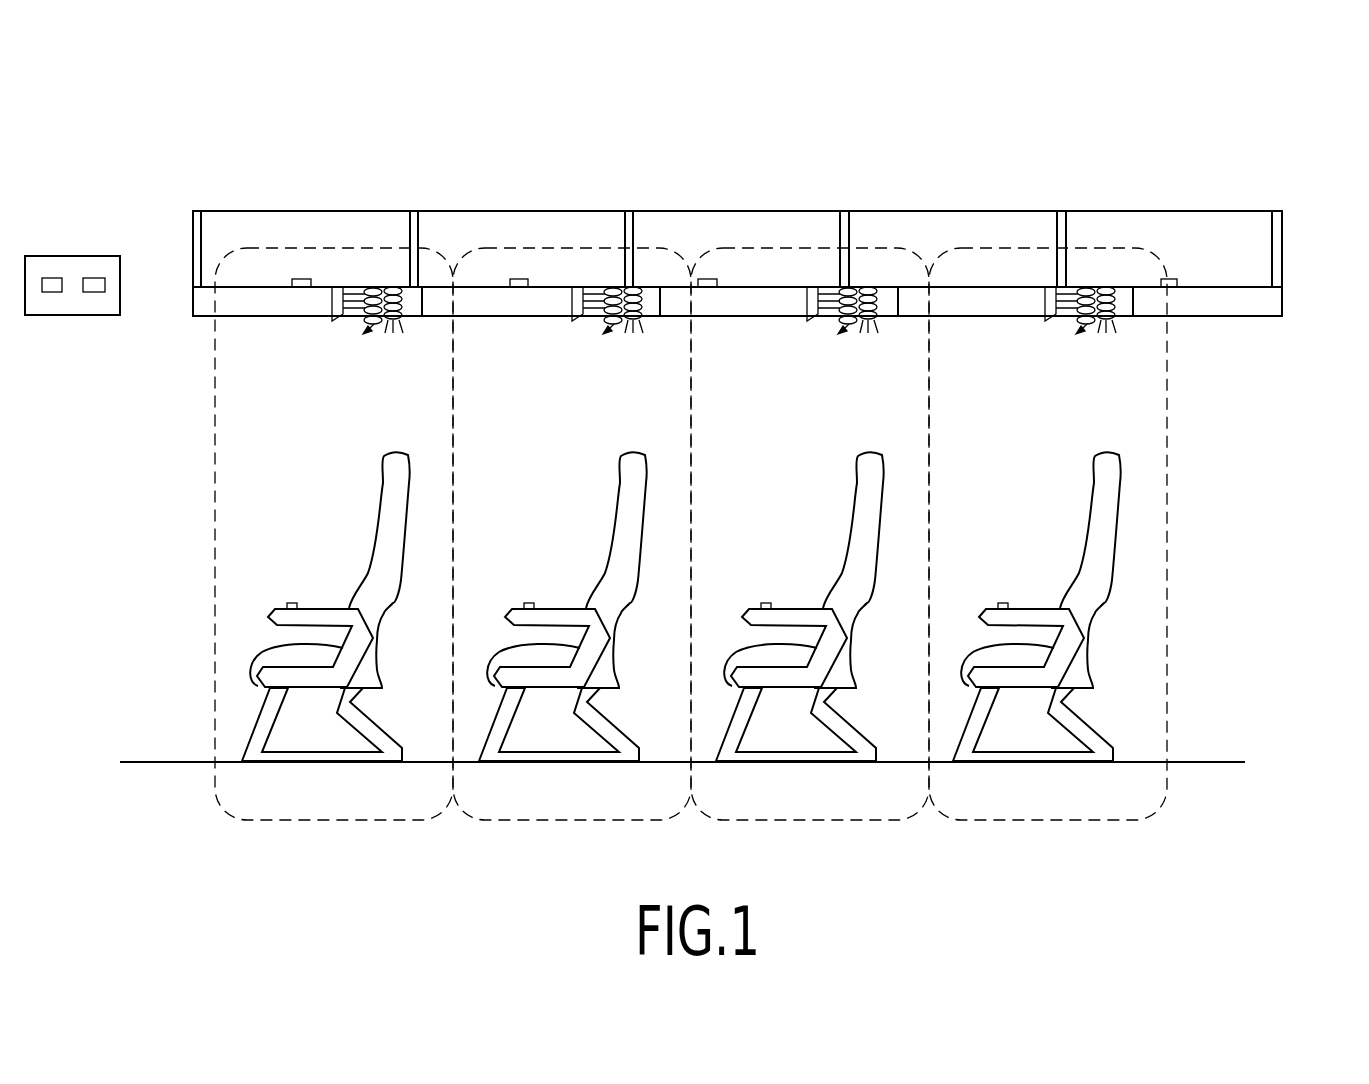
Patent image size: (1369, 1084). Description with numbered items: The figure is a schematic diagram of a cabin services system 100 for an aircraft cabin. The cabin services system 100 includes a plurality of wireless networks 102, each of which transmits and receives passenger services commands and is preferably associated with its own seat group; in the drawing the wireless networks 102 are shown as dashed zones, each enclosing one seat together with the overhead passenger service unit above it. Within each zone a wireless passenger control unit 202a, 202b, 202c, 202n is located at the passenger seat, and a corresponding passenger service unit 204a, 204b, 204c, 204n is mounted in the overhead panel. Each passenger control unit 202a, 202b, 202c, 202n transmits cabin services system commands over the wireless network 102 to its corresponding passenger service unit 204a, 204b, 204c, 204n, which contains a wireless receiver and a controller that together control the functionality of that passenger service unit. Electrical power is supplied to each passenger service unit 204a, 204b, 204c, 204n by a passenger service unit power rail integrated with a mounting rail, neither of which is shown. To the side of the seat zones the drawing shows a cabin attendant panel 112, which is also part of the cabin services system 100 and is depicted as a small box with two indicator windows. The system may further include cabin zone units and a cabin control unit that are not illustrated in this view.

The cabin services system 100 is at (1255, 92).
The wireless network 102 is at (250, 248).
The cabin attendant panel 112 is at (82, 256).
The wireless passenger control unit 202a is at (292, 603).
The wireless passenger control unit 202b is at (563, 606).
The wireless passenger control unit 202c is at (800, 606).
The wireless passenger control unit 202n is at (1037, 606).
The passenger service unit 204a is at (351, 287).
The passenger service unit 204b is at (601, 237).
The passenger service unit 204c is at (838, 237).
The passenger service unit 204n is at (1080, 237).